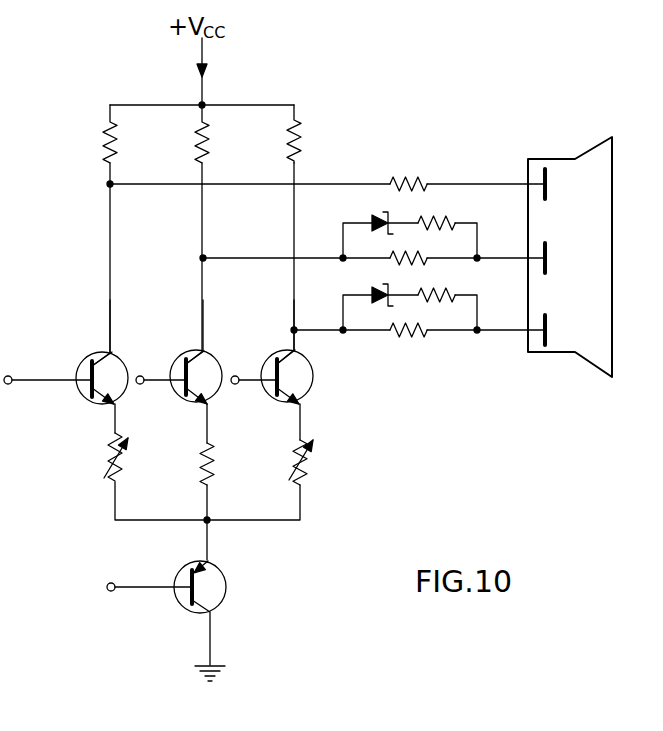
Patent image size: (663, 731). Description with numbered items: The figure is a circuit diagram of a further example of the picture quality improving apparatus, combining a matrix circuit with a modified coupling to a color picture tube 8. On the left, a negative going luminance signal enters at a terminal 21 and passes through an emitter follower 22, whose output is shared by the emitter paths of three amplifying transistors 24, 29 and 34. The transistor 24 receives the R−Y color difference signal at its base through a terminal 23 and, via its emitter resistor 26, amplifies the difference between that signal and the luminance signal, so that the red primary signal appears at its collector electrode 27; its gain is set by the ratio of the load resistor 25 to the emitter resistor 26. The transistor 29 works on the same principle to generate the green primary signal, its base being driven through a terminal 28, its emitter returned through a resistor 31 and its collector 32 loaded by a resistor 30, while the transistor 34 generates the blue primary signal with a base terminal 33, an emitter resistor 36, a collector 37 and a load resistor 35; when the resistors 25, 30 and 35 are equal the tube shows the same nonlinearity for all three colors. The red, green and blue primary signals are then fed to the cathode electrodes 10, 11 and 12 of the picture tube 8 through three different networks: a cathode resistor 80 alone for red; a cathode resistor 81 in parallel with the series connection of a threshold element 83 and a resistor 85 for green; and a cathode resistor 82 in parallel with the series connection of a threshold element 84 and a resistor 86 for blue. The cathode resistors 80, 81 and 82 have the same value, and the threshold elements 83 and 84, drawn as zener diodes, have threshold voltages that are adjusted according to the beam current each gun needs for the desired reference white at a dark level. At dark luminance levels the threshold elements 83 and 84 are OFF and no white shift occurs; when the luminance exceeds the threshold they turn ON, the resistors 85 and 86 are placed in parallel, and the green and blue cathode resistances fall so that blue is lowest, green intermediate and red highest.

The color picture tube 8 is at (568, 158).
The cathode electrode 10 is at (576, 184).
The cathode electrode 11 is at (578, 258).
The cathode electrode 12 is at (576, 328).
The terminal 21 is at (108, 584).
The emitter follower 22 is at (215, 575).
The terminal 23 is at (10, 385).
The transistor 24 is at (118, 390).
The load resistor 25 is at (120, 153).
The emitter resistor 26 is at (125, 471).
The collector electrode 27 is at (112, 354).
The input terminal 28 is at (143, 377).
The transistor 29 is at (212, 390).
The resistor 30 is at (212, 152).
The emitter resistor 31 is at (218, 471).
The collector 32 is at (205, 350).
The input terminal 33 is at (238, 377).
The transistor 34 is at (302, 394).
The resistor 35 is at (302, 153).
The variable emitter resistor 36 is at (312, 470).
The collector 37 is at (306, 352).
The cathode resistor 80 is at (427, 176).
The cathode resistor 81 is at (420, 264).
The cathode resistor 82 is at (420, 336).
The threshold element 83 is at (370, 216).
The threshold element 84 is at (370, 290).
The resistor 85 is at (452, 226).
The resistor 86 is at (460, 298).